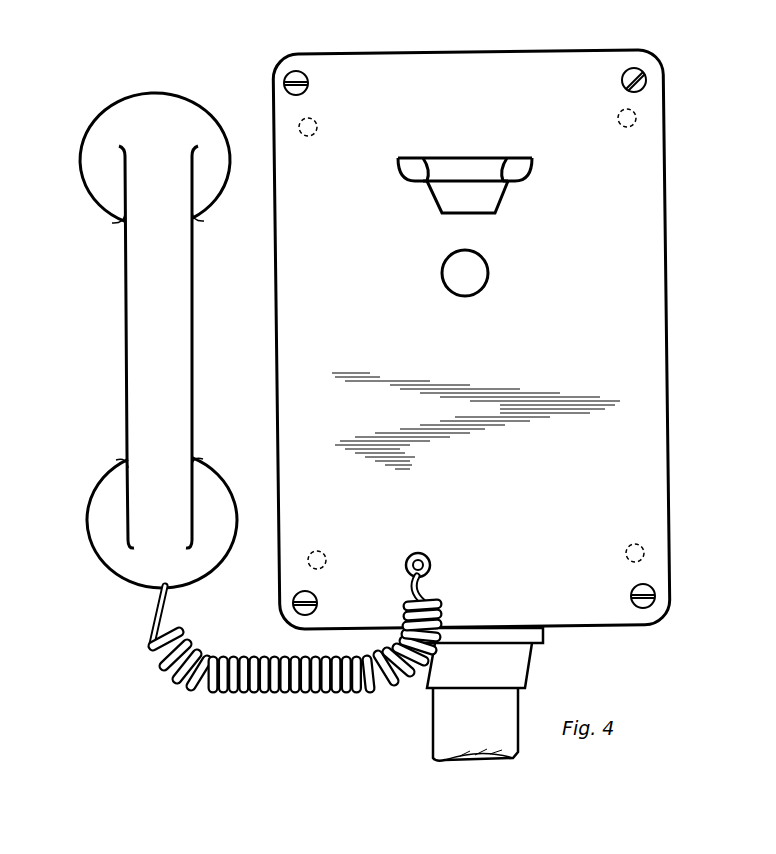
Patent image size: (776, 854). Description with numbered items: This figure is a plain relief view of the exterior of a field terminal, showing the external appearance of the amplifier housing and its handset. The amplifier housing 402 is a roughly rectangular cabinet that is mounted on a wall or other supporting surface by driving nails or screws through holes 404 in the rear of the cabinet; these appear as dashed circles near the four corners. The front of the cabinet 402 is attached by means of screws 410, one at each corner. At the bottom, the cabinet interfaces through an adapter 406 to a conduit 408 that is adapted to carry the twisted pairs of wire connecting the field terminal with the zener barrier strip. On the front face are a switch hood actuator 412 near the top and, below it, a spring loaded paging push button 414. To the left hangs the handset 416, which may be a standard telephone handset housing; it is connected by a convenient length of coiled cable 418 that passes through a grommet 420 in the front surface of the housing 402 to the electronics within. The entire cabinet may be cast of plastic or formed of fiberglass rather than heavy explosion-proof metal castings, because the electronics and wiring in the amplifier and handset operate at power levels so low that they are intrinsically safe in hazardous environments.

The amplifier housing 402 is at (665, 216).
The holes 404 is at (617, 112).
The adapter 406 is at (534, 657).
The conduit 408 is at (432, 742).
The screws 410 is at (621, 80).
The switch hood actuator 412 is at (511, 186).
The spring loaded paging push button 414 is at (490, 271).
The handset 416 is at (124, 350).
The coiled cable 418 is at (198, 692).
The grommet 420 is at (431, 562).